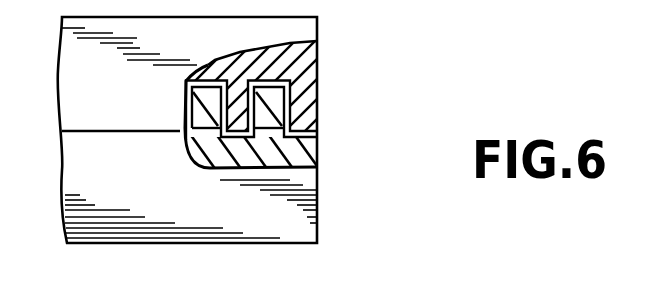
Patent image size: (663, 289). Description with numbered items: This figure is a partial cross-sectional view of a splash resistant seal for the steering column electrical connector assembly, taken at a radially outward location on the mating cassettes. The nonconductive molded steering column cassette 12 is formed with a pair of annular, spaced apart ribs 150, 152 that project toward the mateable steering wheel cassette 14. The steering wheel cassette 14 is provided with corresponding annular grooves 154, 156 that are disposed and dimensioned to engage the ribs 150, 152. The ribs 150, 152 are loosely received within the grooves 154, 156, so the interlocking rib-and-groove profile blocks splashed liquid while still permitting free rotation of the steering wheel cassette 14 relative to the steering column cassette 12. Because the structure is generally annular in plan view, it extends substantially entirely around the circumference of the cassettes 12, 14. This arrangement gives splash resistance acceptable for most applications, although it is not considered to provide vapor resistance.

The steering column cassette 12 is at (125, 198).
The steering wheel cassette 14 is at (101, 81).
The annular rib 150 is at (283, 108).
The annular rib 152 is at (186, 107).
The annular groove 154 is at (284, 64).
The annular groove 156 is at (207, 70).